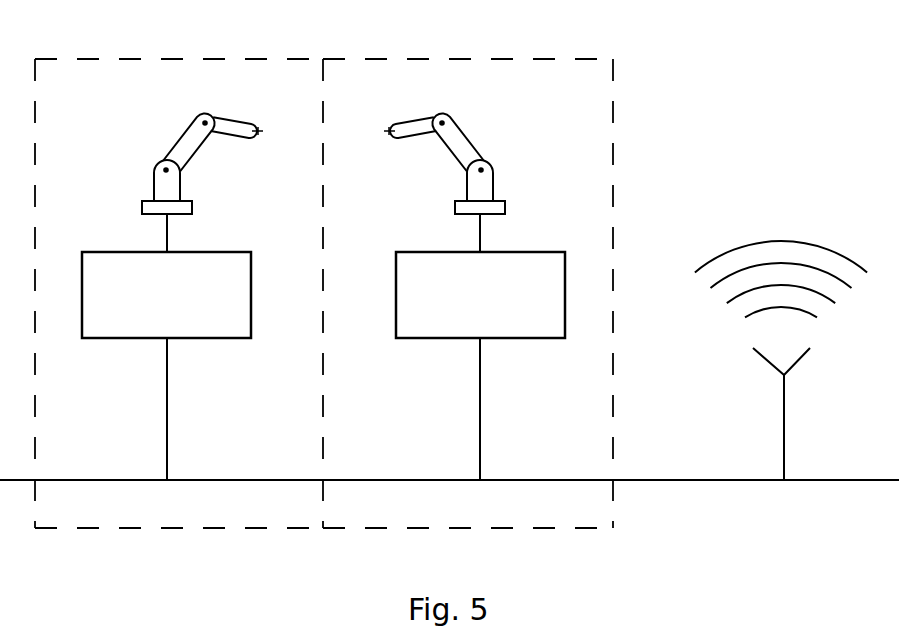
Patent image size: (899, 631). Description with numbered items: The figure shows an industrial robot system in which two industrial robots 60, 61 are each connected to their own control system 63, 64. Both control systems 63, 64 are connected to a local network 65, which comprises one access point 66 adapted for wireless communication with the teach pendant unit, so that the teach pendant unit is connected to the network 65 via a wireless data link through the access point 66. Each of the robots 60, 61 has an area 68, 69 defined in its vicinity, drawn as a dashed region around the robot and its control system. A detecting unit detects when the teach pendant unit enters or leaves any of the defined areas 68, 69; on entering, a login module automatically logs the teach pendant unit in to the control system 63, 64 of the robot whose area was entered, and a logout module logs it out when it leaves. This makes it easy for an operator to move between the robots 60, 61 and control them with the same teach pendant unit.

The industrial robot 60 is at (177, 128).
The industrial robot 61 is at (468, 130).
The control system 63 is at (228, 259).
The control system 64 is at (543, 260).
The local network 65 is at (640, 479).
The access point 66 is at (784, 423).
The area 68 is at (60, 92).
The area 69 is at (393, 95).